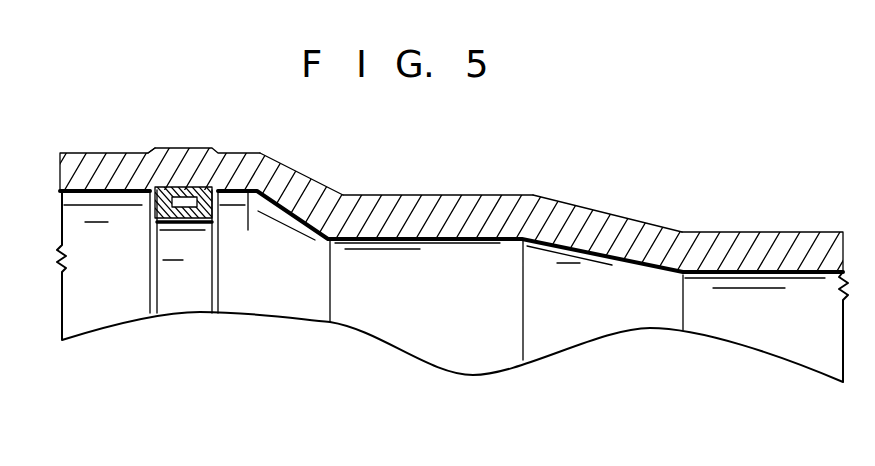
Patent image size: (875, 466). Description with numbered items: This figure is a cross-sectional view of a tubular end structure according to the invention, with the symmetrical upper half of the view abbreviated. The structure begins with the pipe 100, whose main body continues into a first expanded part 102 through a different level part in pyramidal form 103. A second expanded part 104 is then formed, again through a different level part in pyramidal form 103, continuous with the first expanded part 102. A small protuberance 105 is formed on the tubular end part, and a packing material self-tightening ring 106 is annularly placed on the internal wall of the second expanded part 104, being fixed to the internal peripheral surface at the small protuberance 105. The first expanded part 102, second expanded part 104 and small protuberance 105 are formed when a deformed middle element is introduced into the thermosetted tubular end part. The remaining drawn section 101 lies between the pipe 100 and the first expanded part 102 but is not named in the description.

The first band section 100 is at (752, 232).
The first inclined band section 101 is at (614, 216).
The intermediate band section 102 is at (415, 194).
The second inclined band section 103 is at (315, 181).
The end band section 104 is at (115, 152).
The raised portion 105 is at (184, 147).
The insert block 106 is at (214, 258).